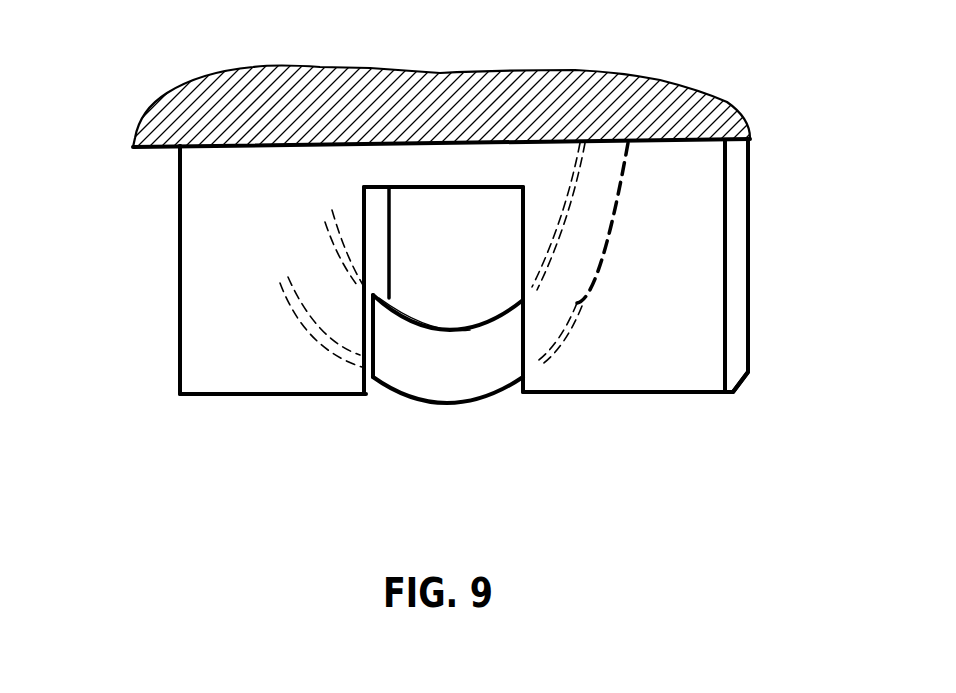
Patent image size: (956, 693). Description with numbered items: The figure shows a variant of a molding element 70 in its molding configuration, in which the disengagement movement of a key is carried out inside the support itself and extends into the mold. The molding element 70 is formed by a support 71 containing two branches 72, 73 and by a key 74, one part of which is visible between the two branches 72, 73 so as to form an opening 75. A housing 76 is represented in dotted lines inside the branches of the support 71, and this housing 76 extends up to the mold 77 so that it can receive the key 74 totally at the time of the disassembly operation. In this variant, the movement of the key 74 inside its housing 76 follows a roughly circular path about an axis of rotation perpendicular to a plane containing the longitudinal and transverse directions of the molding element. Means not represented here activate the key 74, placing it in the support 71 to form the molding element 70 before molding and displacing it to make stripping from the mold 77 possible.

The molding element 70 is at (280, 423).
The support 71 is at (697, 197).
The branch 72 is at (223, 293).
The branch 73 is at (690, 303).
The key 74 is at (442, 377).
The opening 75 is at (455, 233).
The housing 76 is at (297, 302).
The mold 77 is at (707, 108).